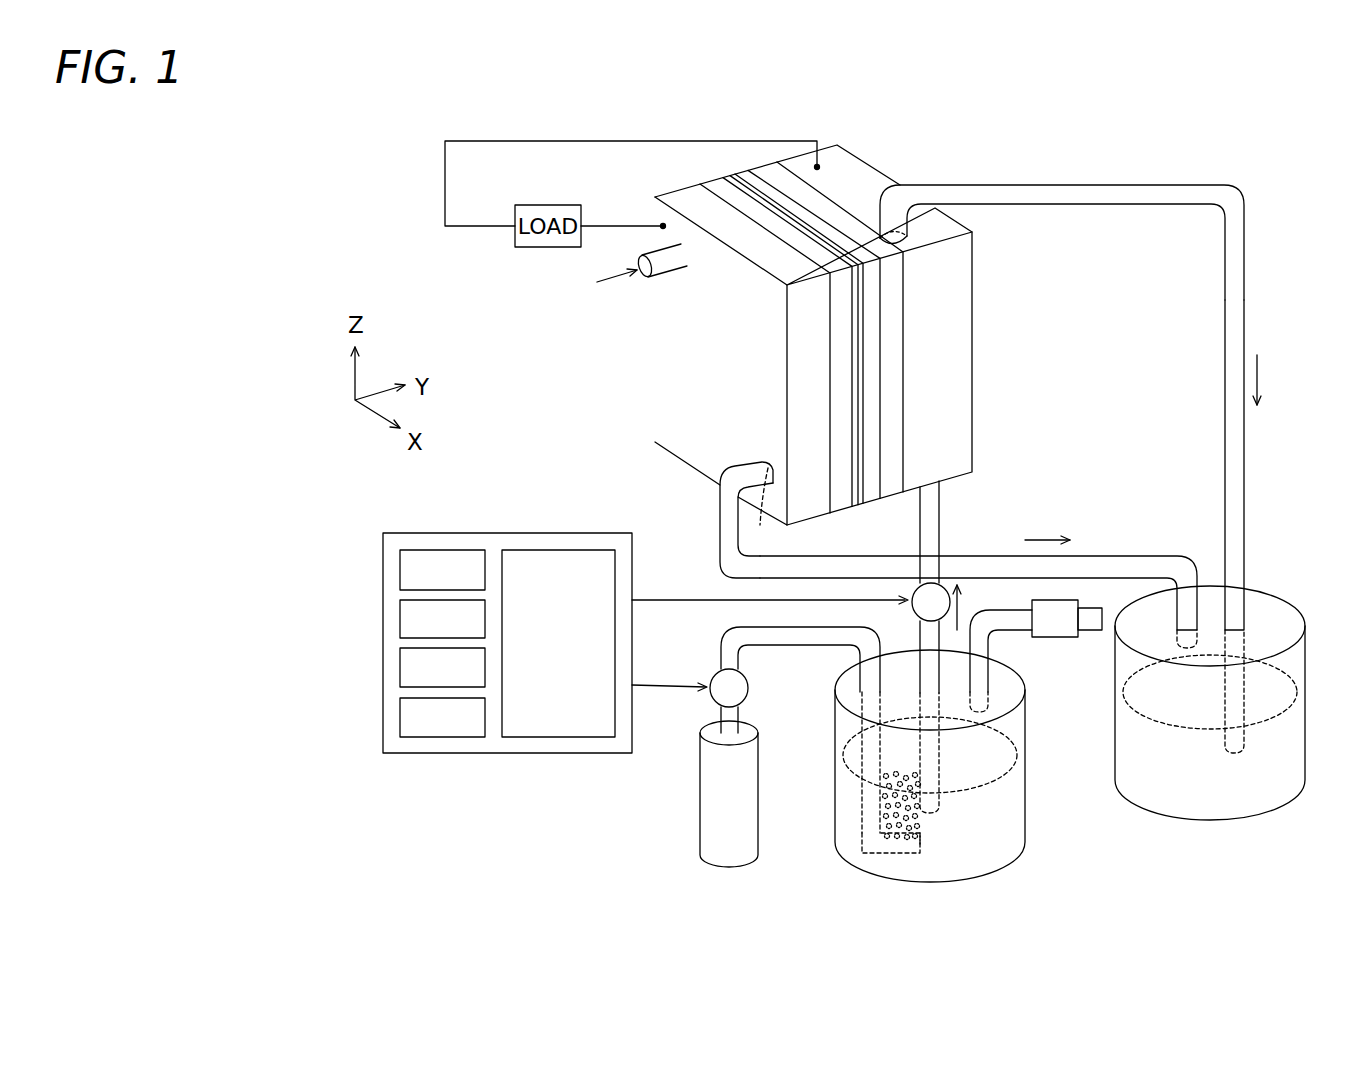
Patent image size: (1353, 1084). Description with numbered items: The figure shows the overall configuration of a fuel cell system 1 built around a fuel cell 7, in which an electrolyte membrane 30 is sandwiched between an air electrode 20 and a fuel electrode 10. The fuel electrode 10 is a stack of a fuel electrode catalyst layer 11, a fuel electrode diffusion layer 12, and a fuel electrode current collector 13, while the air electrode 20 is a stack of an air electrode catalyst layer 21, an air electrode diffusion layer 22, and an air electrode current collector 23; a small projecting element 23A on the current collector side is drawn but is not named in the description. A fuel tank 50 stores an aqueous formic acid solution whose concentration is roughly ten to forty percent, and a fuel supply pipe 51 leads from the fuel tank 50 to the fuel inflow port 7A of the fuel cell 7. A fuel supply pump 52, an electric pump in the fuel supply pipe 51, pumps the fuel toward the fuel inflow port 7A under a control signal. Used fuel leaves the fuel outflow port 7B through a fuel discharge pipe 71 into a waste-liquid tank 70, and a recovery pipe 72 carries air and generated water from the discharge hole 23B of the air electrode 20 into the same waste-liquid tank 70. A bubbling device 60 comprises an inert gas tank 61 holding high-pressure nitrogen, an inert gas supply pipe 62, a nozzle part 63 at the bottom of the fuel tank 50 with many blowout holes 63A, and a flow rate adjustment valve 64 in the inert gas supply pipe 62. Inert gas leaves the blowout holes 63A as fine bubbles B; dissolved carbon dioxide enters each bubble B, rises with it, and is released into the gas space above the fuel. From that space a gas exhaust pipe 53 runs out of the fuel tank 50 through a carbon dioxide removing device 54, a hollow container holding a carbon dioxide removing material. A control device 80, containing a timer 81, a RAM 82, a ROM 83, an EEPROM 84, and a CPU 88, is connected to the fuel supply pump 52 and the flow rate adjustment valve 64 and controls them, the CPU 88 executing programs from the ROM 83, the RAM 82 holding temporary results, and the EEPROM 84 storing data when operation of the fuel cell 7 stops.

The fuel cell system 1 is at (1262, 150).
The fuel cell 7 is at (980, 337).
The fuel inflow port 7A is at (940, 496).
The fuel outflow port 7B is at (970, 232).
The fuel electrode 10 is at (774, 290).
The fuel electrode catalyst layer 11 is at (767, 192).
The fuel electrode diffusion layer 12 is at (823, 210).
The fuel electrode current collector 13 is at (882, 164).
The air electrode 20 is at (623, 98).
The air electrode catalyst layer 21 is at (730, 177).
The air electrode diffusion layer 22 is at (715, 190).
The air electrode current collector 23 is at (685, 205).
The terminal 23A is at (642, 280).
The discharge hole 23B is at (753, 520).
The electrolyte membrane 30 is at (738, 172).
The fuel tank 50 is at (972, 741).
The fuel supply pipe 51 is at (920, 668).
The fuel supply pump 52 is at (920, 590).
The gas exhaust pipe 53 is at (1088, 632).
The carbon dioxide removing device 54 is at (1065, 638).
The bubbling device 60 is at (834, 796).
The inert gas tank 61 is at (730, 868).
The inert gas supply pipe 62 is at (792, 645).
The nozzle part 63 is at (900, 855).
The blowout holes 63A is at (920, 833).
The flow rate adjustment valve 64 is at (748, 698).
The bubble B is at (925, 812).
The waste-liquid tank 70 is at (1275, 585).
The fuel discharge pipe 71 is at (1246, 288).
The recovery pipe 72 is at (1117, 557).
The control device 80 is at (620, 685).
The timer 81 is at (400, 566).
The RAM 82 is at (400, 616).
The ROM 83 is at (400, 666).
The EEPROM 84 is at (400, 716).
The CPU 88 is at (557, 737).